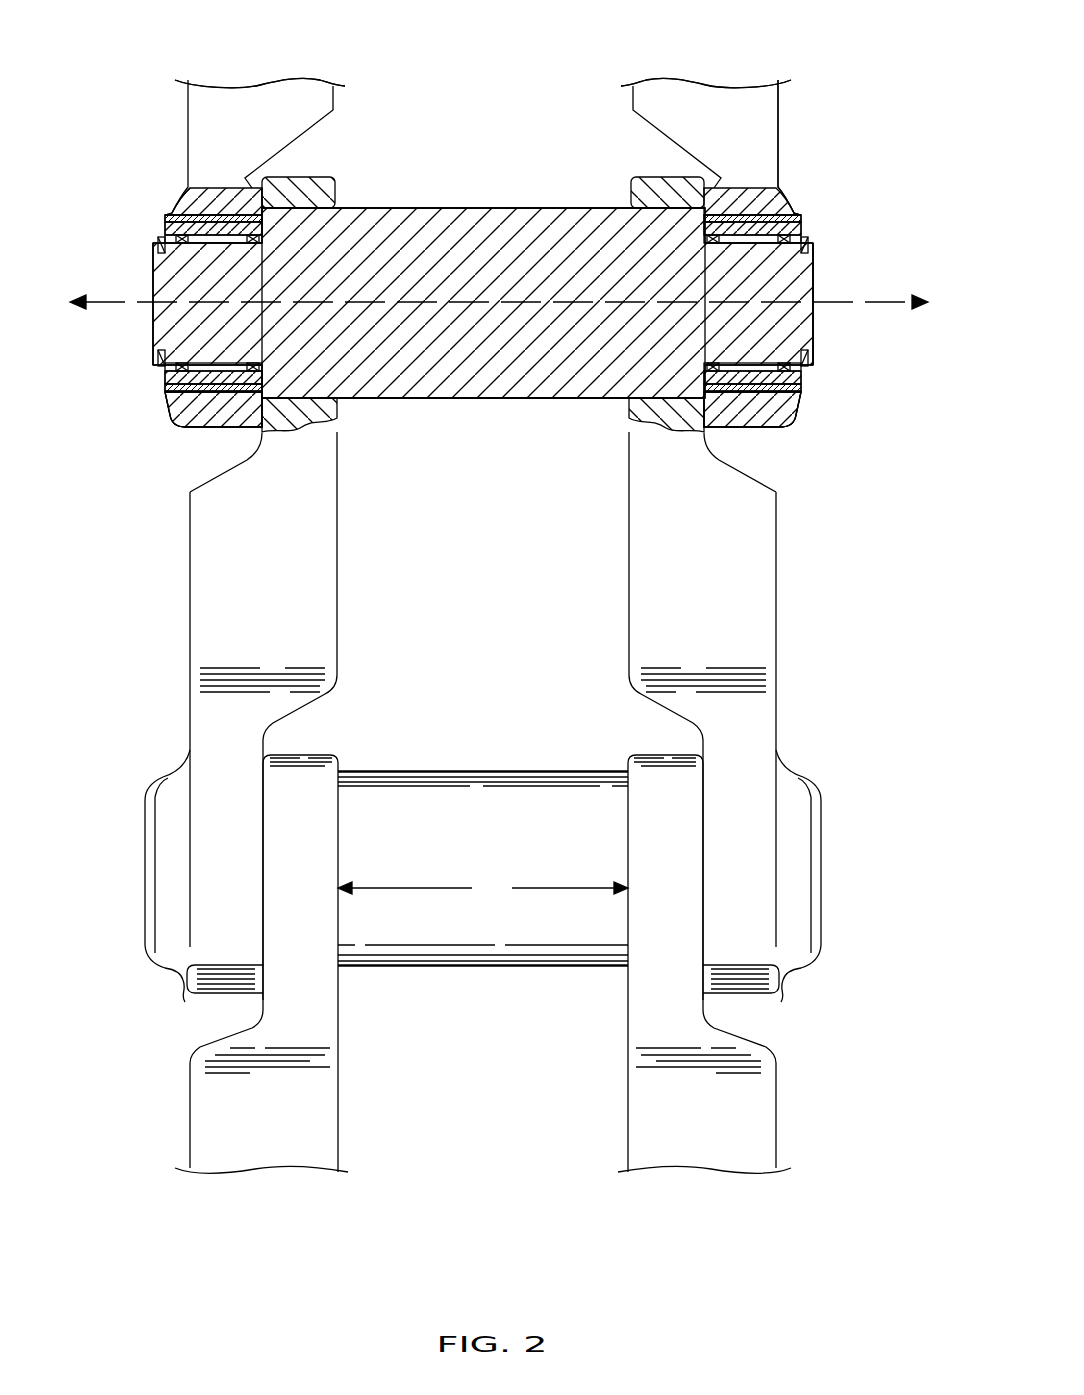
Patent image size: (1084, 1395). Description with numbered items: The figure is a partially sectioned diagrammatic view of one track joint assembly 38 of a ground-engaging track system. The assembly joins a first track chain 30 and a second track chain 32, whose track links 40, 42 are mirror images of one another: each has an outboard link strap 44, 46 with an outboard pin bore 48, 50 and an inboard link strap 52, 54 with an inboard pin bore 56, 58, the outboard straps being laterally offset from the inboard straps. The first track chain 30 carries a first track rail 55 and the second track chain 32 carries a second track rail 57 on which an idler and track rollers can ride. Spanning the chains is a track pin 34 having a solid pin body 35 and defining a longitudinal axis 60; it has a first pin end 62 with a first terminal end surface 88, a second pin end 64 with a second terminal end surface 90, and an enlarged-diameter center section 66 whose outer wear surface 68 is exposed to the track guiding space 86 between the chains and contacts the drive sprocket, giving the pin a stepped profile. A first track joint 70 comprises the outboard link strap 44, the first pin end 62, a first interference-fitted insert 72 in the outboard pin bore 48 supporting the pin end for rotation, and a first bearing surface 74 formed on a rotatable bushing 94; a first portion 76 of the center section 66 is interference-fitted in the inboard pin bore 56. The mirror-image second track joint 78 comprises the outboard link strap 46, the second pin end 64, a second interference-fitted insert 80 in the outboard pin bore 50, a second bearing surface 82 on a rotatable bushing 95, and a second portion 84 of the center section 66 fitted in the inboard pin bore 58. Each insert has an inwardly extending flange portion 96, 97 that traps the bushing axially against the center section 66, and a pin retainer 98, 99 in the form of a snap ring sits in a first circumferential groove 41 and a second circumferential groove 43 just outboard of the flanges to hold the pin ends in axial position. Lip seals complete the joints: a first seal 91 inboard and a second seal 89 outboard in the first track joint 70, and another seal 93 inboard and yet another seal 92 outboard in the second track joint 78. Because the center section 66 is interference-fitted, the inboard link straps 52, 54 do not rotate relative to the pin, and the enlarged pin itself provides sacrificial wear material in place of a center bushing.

The first track chain 30 is at (773, 47).
The second track chain 32 is at (164, 80).
The track pin 34 is at (517, 402).
The solid pin body 35 is at (440, 398).
The track joint assembly 38 is at (857, 188).
The track link 40 is at (779, 98).
The first circumferential groove 41 is at (812, 338).
The track link 42 is at (187, 122).
The second circumferential groove 43 is at (157, 338).
The outboard link strap 44 is at (789, 414).
The outboard link strap 46 is at (181, 415).
The outboard pin bore 48 is at (803, 386).
The outboard pin bore 50 is at (178, 392).
The inboard link strap 52 is at (630, 188).
The inboard link strap 54 is at (336, 188).
The first track rail 55 is at (753, 648).
The inboard pin bore 56 is at (625, 399).
The second track rail 57 is at (214, 648).
The inboard pin bore 58 is at (345, 399).
The longitudinal axis 60 is at (896, 300).
The first pin end 62 is at (795, 278).
The second pin end 64 is at (172, 270).
The center section 66 is at (512, 222).
The outer wear surface 68 is at (445, 209).
The first track joint 70 is at (790, 448).
The first interference-fitted insert 72 is at (785, 212).
The first bearing surface 74 is at (748, 200).
The first portion 76 is at (660, 215).
The second track joint 78 is at (188, 448).
The second interference-fitted insert 80 is at (184, 192).
The second bearing surface 82 is at (222, 200).
The second portion 84 is at (305, 216).
The track guiding space 86 is at (483, 888).
The first terminal end surface 88 is at (815, 262).
The second seal 89 is at (789, 222).
The second terminal end surface 90 is at (158, 346).
The first seal 91 is at (720, 362).
The seal 92 is at (177, 212).
The seal 93 is at (245, 360).
The rotatable bushing 94 is at (750, 400).
The rotatable bushing 95 is at (218, 400).
The inwardly extending flange portion 96 is at (809, 368).
The inwardly extending flange portion 97 is at (165, 222).
The pin retainer 98 is at (809, 240).
The pin retainer 99 is at (160, 372).